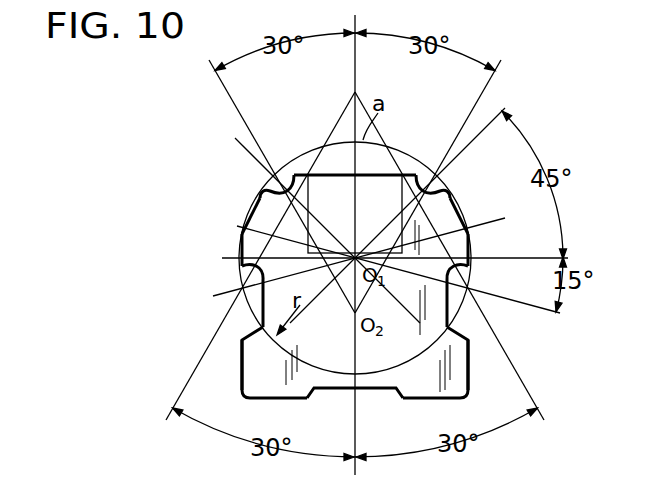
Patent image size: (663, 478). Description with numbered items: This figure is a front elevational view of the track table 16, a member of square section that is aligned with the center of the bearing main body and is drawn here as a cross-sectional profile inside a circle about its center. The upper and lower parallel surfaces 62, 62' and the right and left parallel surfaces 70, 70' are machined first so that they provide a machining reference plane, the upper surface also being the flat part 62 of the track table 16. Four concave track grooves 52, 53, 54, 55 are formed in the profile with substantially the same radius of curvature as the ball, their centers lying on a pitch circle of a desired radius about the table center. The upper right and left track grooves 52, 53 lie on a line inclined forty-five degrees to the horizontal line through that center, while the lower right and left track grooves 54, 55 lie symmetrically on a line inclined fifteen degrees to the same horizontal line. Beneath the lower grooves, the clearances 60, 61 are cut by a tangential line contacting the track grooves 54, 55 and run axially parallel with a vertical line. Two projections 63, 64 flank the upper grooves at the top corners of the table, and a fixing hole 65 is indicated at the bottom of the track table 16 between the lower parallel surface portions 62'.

The track table 16 is at (487, 375).
The upper left track groove 52 is at (272, 188).
The upper right track groove 53 is at (421, 172).
The lower left track groove 54 is at (252, 273).
The lower right track groove 55 is at (458, 268).
The clearance 60 is at (262, 292).
The clearance 61 is at (447, 300).
The upper parallel surface 62 is at (355, 142).
The lower parallel surface 62' is at (355, 422).
The projection 63 is at (258, 208).
The projection 64 is at (448, 196).
The fixing hole 65 is at (379, 362).
The left parallel surface 70 is at (208, 315).
The right parallel surface 70' is at (504, 304).